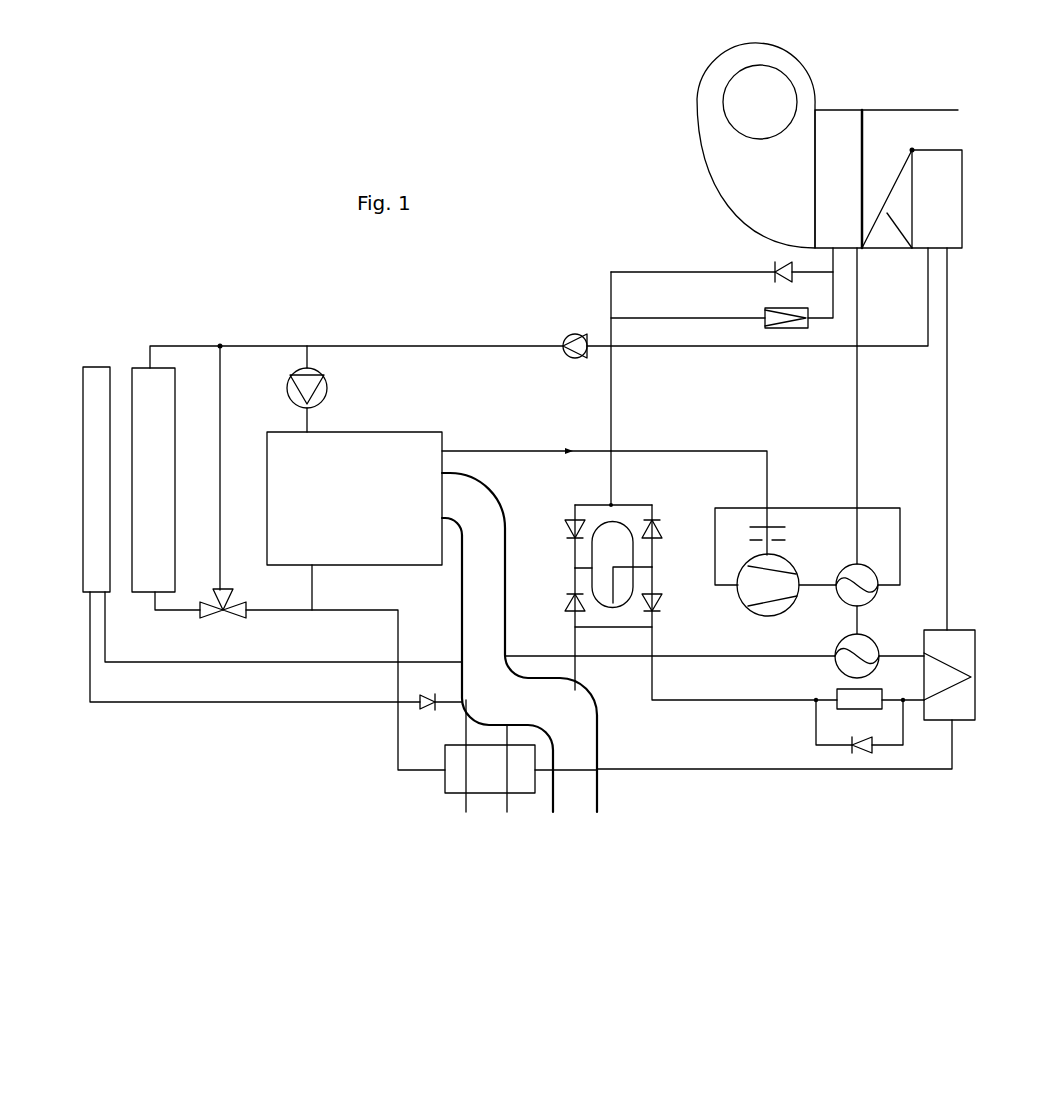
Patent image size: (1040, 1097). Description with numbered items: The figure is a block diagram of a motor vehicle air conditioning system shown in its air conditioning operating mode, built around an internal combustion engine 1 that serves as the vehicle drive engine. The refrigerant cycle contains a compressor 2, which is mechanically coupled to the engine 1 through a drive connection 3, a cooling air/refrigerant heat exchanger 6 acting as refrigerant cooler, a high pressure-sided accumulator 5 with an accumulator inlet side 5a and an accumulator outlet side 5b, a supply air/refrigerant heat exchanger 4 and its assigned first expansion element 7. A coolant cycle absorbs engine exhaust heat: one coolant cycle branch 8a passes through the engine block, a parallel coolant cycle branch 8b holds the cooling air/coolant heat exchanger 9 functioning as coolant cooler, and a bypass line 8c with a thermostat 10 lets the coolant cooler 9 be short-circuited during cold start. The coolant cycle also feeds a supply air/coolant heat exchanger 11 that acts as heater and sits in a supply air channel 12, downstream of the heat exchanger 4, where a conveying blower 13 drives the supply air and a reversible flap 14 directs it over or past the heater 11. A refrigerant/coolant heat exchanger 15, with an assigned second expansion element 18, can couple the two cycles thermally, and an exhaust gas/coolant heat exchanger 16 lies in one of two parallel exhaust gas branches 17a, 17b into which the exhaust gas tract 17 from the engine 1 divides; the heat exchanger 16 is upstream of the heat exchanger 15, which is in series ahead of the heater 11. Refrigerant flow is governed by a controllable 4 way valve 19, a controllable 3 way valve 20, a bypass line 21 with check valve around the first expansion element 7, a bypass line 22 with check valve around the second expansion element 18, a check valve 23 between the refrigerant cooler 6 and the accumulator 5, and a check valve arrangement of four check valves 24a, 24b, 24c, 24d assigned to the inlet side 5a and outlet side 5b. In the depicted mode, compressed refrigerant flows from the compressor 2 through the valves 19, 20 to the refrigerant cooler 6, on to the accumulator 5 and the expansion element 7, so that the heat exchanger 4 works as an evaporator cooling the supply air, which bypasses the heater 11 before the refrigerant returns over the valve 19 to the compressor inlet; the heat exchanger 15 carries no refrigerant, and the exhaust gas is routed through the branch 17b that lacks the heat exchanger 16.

The internal combustion engine 1 is at (384, 445).
The compressor 2 is at (748, 596).
The drive connection 3 is at (688, 451).
The supply air/refrigerant heat exchanger 4 is at (838, 122).
The high pressure-sided accumulator 5 is at (622, 540).
The accumulator inlet side 5a is at (585, 568).
The accumulator outlet side 5b is at (652, 568).
The cooling air/refrigerant heat exchanger 6 is at (272, 534).
The first expansion element 7 is at (775, 308).
The coolant cycle branch 8a is at (312, 424).
The parallel coolant cycle branch 8b is at (191, 346).
The bypass line 8c is at (222, 424).
The cooling air/coolant heat exchanger 9 is at (166, 489).
The thermostat 10 is at (222, 613).
The supply air/coolant heat exchanger 11 is at (950, 178).
The supply air channel 12 is at (928, 122).
The conveying blower 13 is at (757, 92).
The reversible flap 14 is at (897, 188).
The refrigerant/coolant heat exchanger 15 is at (962, 640).
The exhaust gas/coolant heat exchanger 16 is at (499, 769).
The exhaust gas tract 17 is at (488, 523).
The exhaust gas branch 17a is at (478, 726).
The exhaust gas branch 17b is at (590, 752).
The second expansion element 18 is at (848, 697).
The 4 way valve 19 is at (848, 576).
The 3 way valve 20 is at (867, 646).
The bypass line 21 is at (657, 272).
The bypass line 22 is at (885, 750).
The check valve 23 is at (420, 705).
The check valve 24a is at (572, 603).
The check valve 24b is at (572, 527).
The check valve 24c is at (660, 600).
The check valve 24d is at (655, 532).